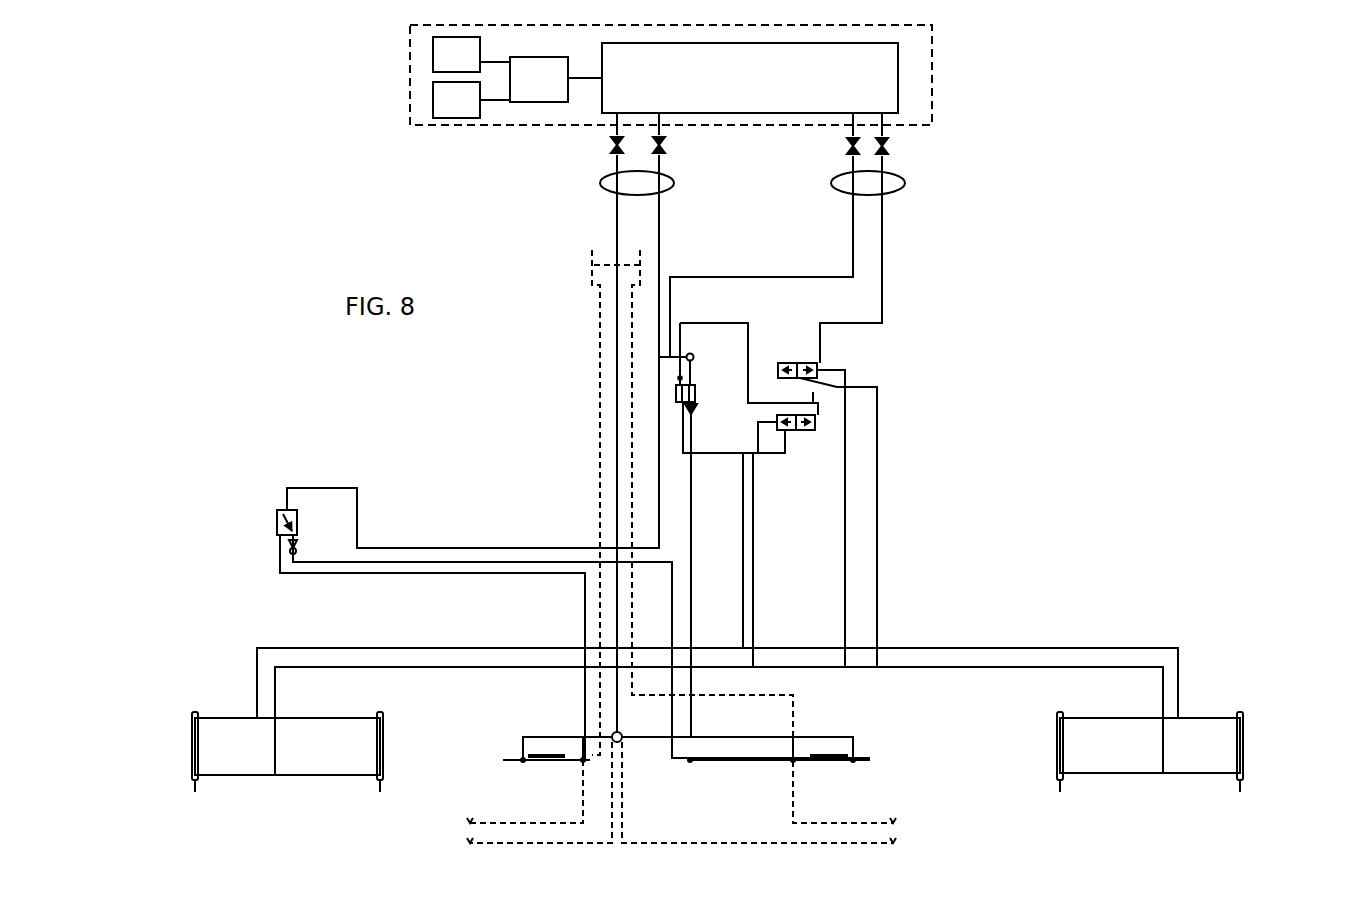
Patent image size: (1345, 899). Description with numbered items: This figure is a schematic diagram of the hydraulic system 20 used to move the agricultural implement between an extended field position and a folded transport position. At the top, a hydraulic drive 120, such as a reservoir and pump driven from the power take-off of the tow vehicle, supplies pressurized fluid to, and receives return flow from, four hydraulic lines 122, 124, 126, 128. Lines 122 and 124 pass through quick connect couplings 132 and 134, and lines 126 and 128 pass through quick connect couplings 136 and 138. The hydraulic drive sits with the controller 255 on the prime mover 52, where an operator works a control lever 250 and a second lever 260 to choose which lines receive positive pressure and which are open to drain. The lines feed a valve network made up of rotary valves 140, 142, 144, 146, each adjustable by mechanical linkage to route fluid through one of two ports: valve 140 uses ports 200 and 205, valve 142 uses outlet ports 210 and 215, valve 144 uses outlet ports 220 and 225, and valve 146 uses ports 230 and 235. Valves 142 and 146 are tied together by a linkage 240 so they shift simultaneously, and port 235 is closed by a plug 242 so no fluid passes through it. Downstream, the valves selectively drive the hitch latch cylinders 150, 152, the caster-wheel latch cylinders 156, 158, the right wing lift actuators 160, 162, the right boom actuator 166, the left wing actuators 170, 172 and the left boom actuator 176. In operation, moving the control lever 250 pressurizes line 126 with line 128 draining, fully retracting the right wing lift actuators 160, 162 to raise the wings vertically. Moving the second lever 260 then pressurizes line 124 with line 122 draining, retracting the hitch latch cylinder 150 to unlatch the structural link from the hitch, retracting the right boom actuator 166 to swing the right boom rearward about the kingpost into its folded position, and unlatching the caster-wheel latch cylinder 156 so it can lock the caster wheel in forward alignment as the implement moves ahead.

The hydraulic system 20 is at (1025, 352).
The prime mover 52 is at (935, 60).
The hydraulic drive 120 is at (898, 88).
The hydraulic line 122 is at (616, 214).
The hydraulic line 124 is at (660, 212).
The hydraulic line 126 is at (853, 212).
The hydraulic line 128 is at (882, 226).
The quick connect coupling 132 is at (610, 145).
The quick connect coupling 134 is at (666, 145).
The quick connect coupling 136 is at (846, 146).
The quick connect coupling 138 is at (889, 146).
The valve 140 is at (277, 518).
The valve 142 is at (815, 428).
The valve 144 is at (695, 386).
The valve 146 is at (797, 363).
The hitch latch cylinder 150 is at (642, 271).
The hitch latch cylinder 152 is at (592, 278).
The caster-wheel latch cylinder 156 is at (893, 843).
The caster-wheel latch cylinder 158 is at (470, 823).
The right wing lift actuator 160 is at (1247, 740).
The right wing lift actuator 162 is at (1050, 740).
The right boom actuator 166 is at (843, 762).
The left wing actuator 170 is at (385, 740).
The left wing actuator 172 is at (188, 740).
The left boom actuator 176 is at (533, 760).
The port 200 is at (284, 538).
The port 205 is at (302, 545).
The outlet port 210 is at (790, 433).
The outlet port 215 is at (775, 438).
The outlet port 220 is at (675, 402).
The outlet port 225 is at (699, 405).
The port 230 is at (793, 382).
The port 235 is at (772, 352).
The linkage 240 is at (813, 397).
The plug 242 is at (778, 368).
The control lever 250 is at (433, 53).
The controller 255 is at (535, 102).
The second lever 260 is at (433, 102).